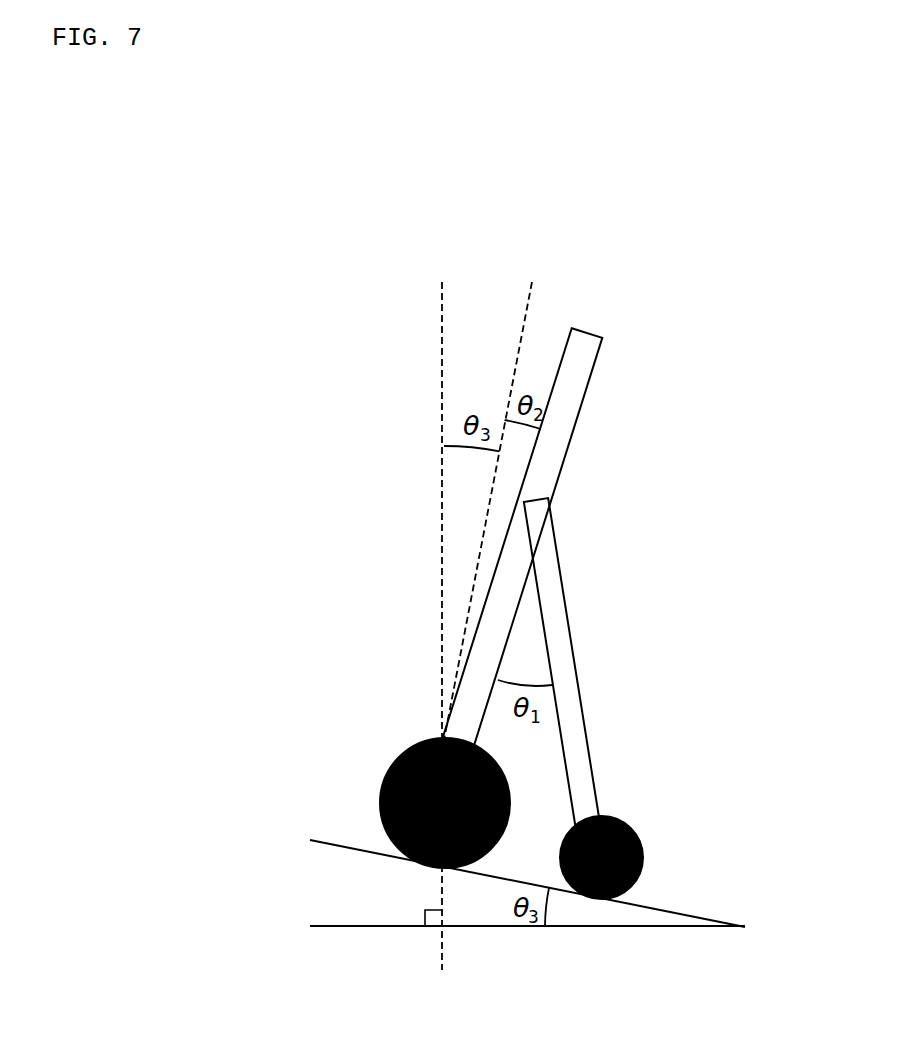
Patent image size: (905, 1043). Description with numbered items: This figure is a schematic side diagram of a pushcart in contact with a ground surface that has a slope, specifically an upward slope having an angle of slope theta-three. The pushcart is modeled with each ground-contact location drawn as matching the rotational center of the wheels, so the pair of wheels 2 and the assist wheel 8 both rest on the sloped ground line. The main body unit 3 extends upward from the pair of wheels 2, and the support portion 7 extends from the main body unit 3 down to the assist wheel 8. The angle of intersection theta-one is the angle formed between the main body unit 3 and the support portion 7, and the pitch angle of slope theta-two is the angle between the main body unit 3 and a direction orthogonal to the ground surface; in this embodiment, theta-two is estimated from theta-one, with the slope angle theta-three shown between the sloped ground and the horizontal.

The pair of wheels 2 is at (400, 754).
The main body unit 3 is at (573, 414).
The support portion 7 is at (557, 598).
The assist wheel 8 is at (643, 851).